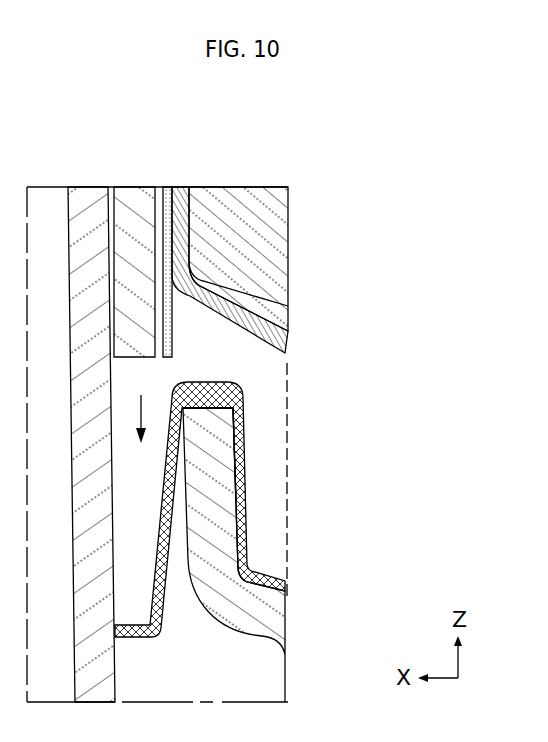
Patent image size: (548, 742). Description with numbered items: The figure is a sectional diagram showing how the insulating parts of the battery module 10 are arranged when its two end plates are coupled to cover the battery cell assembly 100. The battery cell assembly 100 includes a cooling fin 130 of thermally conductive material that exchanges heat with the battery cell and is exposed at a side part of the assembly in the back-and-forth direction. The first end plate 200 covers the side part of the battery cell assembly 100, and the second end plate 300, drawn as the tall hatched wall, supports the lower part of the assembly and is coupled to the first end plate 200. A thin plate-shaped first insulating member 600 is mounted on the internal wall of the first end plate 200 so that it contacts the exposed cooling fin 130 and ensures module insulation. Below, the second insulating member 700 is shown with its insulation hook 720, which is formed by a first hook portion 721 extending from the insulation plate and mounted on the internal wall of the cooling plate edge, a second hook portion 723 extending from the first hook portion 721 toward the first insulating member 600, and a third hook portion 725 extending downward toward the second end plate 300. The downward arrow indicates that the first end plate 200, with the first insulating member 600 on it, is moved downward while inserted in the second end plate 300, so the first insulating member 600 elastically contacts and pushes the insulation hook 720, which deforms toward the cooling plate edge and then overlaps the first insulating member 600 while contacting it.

The battery module 10 is at (307, 155).
The battery cell assembly 100 is at (285, 252).
The cooling fin 130 is at (183, 190).
The first end plate 200 is at (134, 198).
The second end plate 300 is at (88, 198).
The first insulating member 600 is at (167, 192).
The second insulating member 700 is at (276, 536).
The insulation hook 720 is at (276, 536).
The first hook portion 721 is at (243, 498).
The second hook portion 723 is at (215, 381).
The third hook portion 725 is at (186, 478).